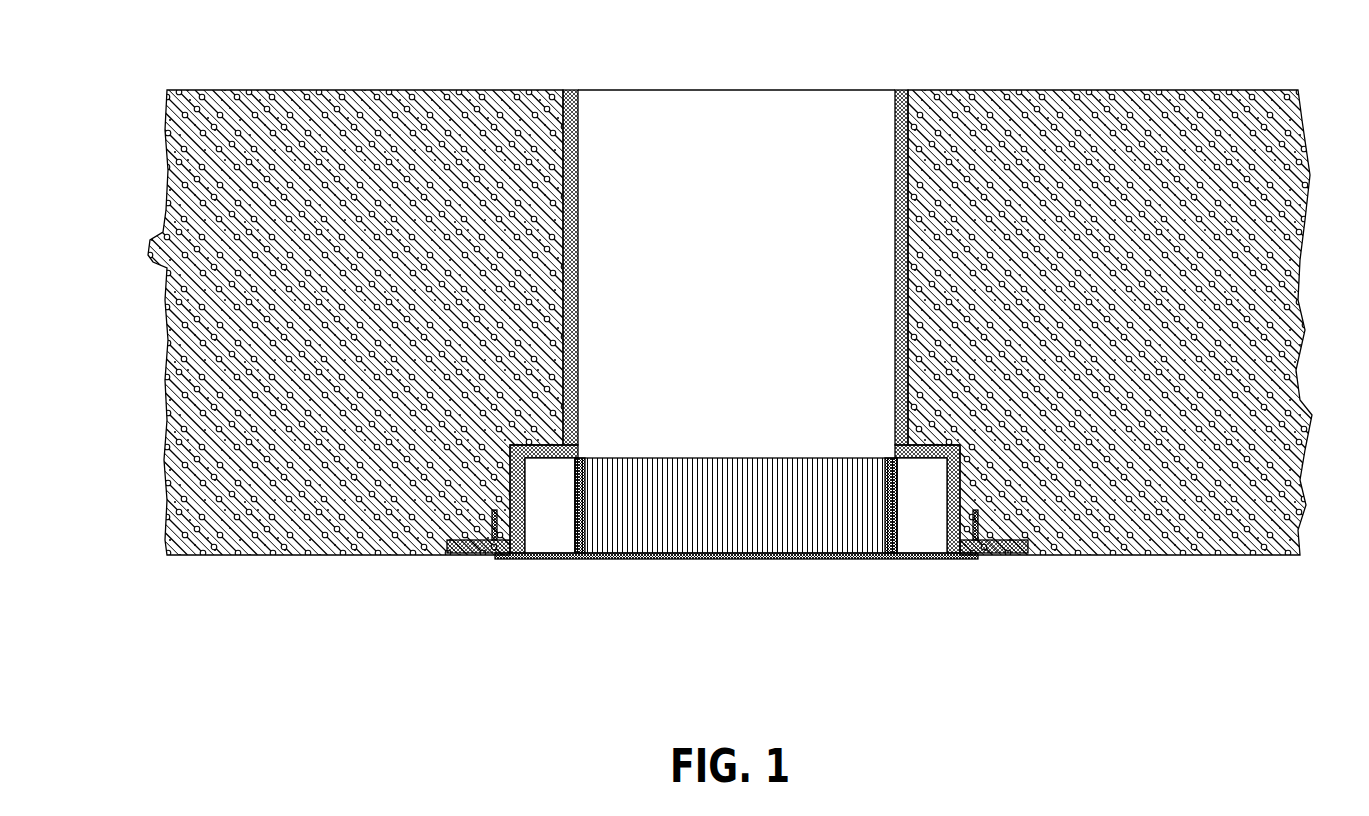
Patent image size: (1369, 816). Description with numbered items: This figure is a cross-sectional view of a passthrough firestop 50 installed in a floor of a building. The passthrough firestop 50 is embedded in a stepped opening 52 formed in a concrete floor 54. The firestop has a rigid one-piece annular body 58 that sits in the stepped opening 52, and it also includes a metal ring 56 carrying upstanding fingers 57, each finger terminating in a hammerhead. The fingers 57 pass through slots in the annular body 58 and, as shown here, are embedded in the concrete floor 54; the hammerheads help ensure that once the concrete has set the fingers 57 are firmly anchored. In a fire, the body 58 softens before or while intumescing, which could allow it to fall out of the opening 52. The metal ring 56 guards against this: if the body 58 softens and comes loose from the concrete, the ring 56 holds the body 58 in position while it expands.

The passthrough firestop 50 is at (735, 564).
The stepped opening 52 is at (720, 113).
The concrete floor 54 is at (458, 100).
The metal ring 56 is at (538, 560).
The upstanding fingers 57 is at (472, 558).
The annular body 58 is at (580, 138).